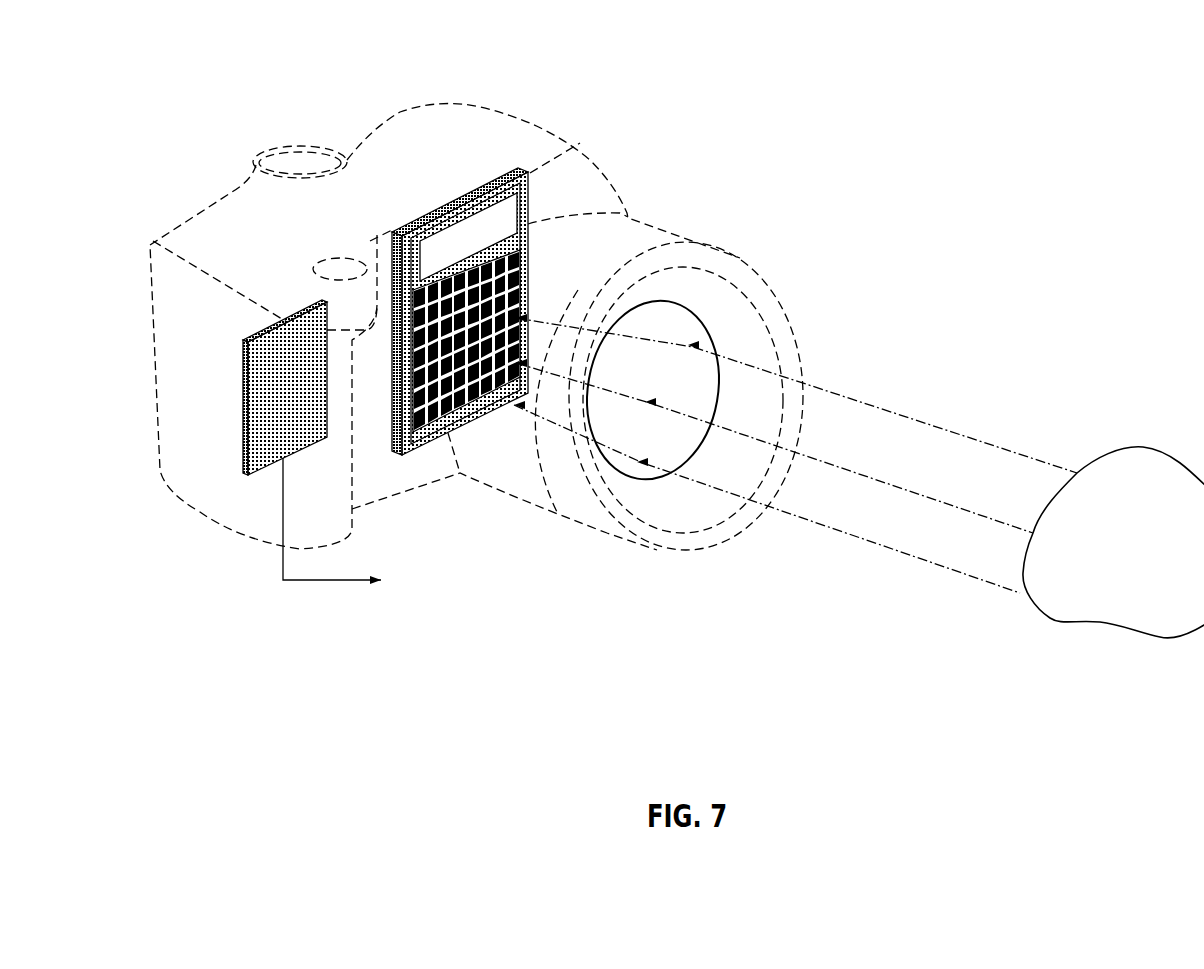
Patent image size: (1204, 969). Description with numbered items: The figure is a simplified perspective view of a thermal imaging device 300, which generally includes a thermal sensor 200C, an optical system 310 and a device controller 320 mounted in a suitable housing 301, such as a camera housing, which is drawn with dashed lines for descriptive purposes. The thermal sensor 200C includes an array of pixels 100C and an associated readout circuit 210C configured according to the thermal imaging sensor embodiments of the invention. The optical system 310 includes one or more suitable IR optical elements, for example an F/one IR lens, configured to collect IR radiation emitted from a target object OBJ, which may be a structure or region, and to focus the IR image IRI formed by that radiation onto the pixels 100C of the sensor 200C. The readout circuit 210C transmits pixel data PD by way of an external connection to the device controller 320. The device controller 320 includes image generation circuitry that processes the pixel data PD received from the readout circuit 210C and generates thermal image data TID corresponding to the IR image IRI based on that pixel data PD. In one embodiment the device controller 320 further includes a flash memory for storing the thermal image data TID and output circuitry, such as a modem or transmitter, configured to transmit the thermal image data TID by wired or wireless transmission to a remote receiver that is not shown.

The thermal imaging device 300 is at (253, 142).
The housing 301 is at (150, 243).
The optical system 310 is at (716, 330).
The device controller 320 is at (242, 476).
The thermal sensor 200C is at (514, 168).
The readout circuit 210C is at (423, 232).
The pixels 100C is at (524, 282).
The pixel data PD is at (425, 258).
The thermal image data TID is at (352, 525).
The IR image IRI is at (843, 530).
The target object OBJ is at (1087, 467).